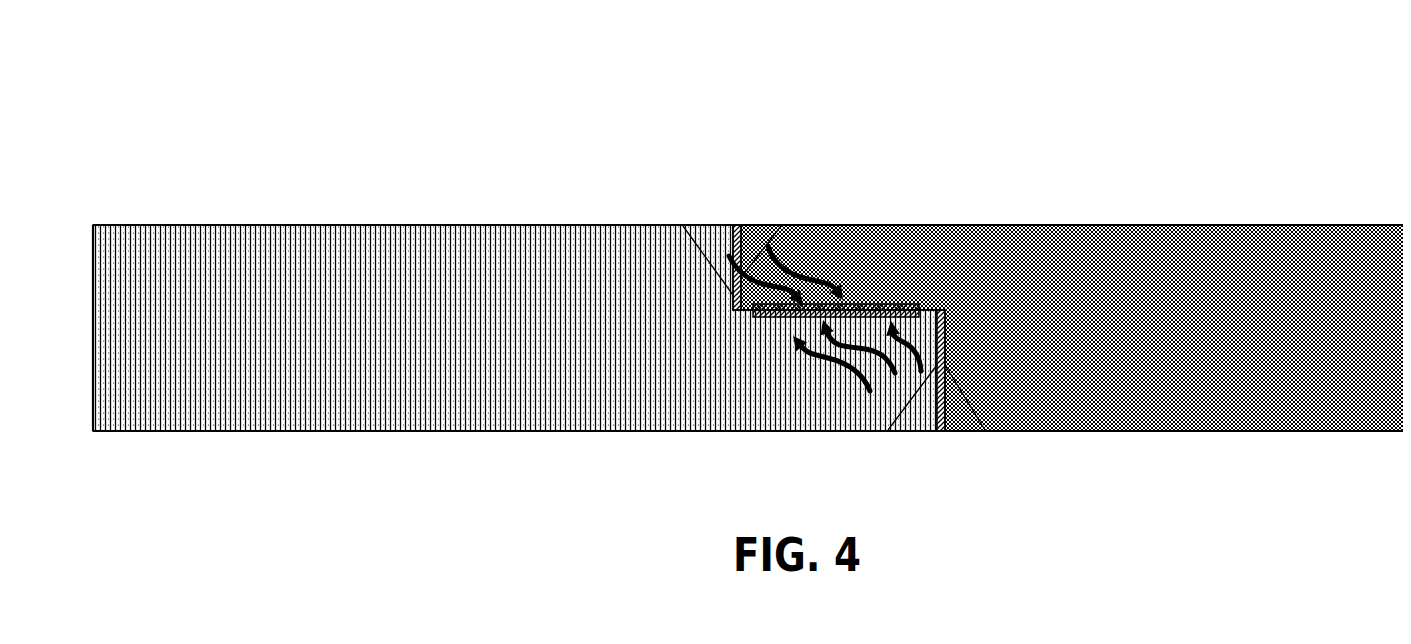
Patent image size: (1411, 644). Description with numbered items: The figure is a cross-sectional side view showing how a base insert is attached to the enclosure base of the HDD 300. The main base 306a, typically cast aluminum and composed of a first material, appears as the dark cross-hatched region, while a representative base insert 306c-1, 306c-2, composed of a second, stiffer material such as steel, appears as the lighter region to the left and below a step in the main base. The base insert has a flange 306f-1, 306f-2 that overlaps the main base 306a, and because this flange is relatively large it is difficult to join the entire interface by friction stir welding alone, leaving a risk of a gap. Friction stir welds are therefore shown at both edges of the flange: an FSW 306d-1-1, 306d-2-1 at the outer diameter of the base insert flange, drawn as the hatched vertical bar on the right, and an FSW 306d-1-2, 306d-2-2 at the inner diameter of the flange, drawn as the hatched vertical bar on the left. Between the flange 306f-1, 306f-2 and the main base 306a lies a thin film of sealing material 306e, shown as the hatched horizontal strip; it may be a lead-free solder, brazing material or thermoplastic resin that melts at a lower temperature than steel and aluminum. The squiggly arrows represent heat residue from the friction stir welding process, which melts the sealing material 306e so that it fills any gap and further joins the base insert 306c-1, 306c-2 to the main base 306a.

The HDD 300 is at (312, 64).
The main base 306a is at (1227, 245).
The first base insert 306c-1 is at (442, 227).
The second base insert 306c-2 is at (514, 328).
The FSW at inner diameter of base insert flange 306d-1-2 is at (730, 205).
The FSW at inner diameter of base insert flange 306d-2-2 is at (737, 267).
The FSW at outer diameter of base insert flange 306d-1-1 is at (938, 437).
The FSW at outer diameter of base insert flange 306d-2-1 is at (941, 370).
The sealing material 306e is at (746, 309).
The flange 306f-1 is at (863, 415).
The flange 306f-2 is at (845, 374).